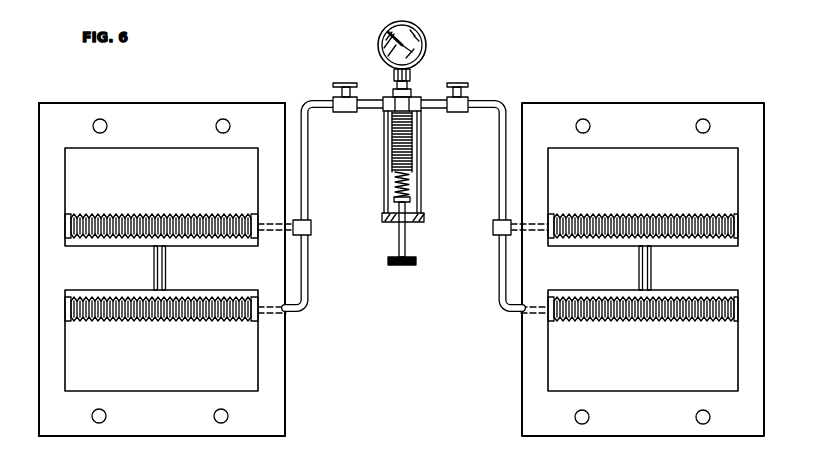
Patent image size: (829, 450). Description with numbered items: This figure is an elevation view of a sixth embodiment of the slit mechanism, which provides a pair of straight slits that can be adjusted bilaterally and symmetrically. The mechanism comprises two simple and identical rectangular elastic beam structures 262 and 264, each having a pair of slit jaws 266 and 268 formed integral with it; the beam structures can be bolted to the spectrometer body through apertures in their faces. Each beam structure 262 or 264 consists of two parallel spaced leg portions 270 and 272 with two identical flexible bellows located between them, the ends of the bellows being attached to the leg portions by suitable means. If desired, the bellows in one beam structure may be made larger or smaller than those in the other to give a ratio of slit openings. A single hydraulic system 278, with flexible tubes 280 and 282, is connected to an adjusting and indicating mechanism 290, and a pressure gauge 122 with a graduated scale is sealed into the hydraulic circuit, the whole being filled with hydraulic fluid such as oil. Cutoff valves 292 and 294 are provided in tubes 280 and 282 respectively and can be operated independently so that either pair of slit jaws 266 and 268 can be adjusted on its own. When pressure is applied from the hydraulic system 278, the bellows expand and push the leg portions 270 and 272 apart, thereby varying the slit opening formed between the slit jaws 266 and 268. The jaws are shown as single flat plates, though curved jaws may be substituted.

The pressure gauge 122 is at (427, 50).
The elastic beam structure 262 is at (174, 269).
The elastic beam structure 264 is at (628, 269).
The slit jaw 266 is at (154, 268).
The slit jaw 268 is at (166, 268).
The leg portion 270 is at (47, 342).
The leg portion 272 is at (275, 342).
The hydraulic system 278 is at (403, 164).
The flexible tube 280 is at (308, 183).
The flexible tube 282 is at (500, 183).
The adjusting and indicating mechanism 290 is at (421, 142).
The cutoff valve 292 is at (345, 82).
The cutoff valve 294 is at (462, 82).